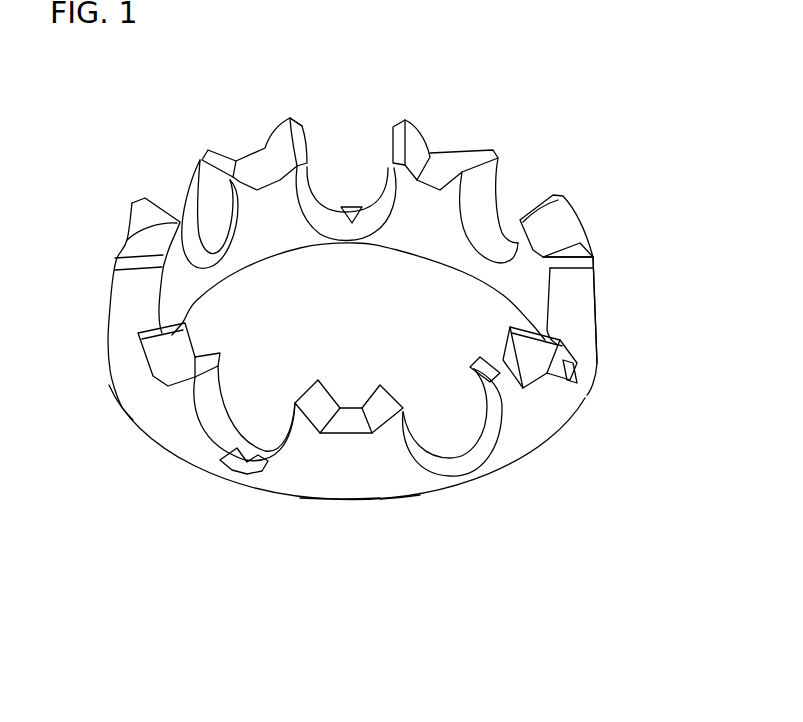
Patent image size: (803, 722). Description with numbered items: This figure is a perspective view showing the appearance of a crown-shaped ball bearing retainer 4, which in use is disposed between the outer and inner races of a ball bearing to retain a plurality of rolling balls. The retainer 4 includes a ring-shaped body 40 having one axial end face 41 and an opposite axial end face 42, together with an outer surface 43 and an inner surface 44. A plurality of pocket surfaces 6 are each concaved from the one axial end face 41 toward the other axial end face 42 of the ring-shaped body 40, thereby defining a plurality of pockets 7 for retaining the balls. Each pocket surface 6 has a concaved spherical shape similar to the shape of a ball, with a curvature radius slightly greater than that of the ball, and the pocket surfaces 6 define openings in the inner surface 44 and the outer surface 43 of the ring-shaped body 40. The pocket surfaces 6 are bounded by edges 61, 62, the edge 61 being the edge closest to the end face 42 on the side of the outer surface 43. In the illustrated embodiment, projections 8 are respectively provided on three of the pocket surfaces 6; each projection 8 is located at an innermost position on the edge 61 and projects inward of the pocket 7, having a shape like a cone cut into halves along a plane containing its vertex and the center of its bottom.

The ball bearing retainer 4 is at (578, 82).
The ring-shaped body 40 is at (553, 413).
The axial end face 41 is at (350, 420).
The axial end face 42 is at (397, 500).
The outer surface 43 is at (357, 479).
The inner surface 44 is at (262, 238).
The pocket surfaces 6 is at (382, 207).
The edge 61 is at (313, 167).
The edge 62 is at (377, 212).
The pockets 7 is at (198, 207).
The projections 8 is at (349, 206).